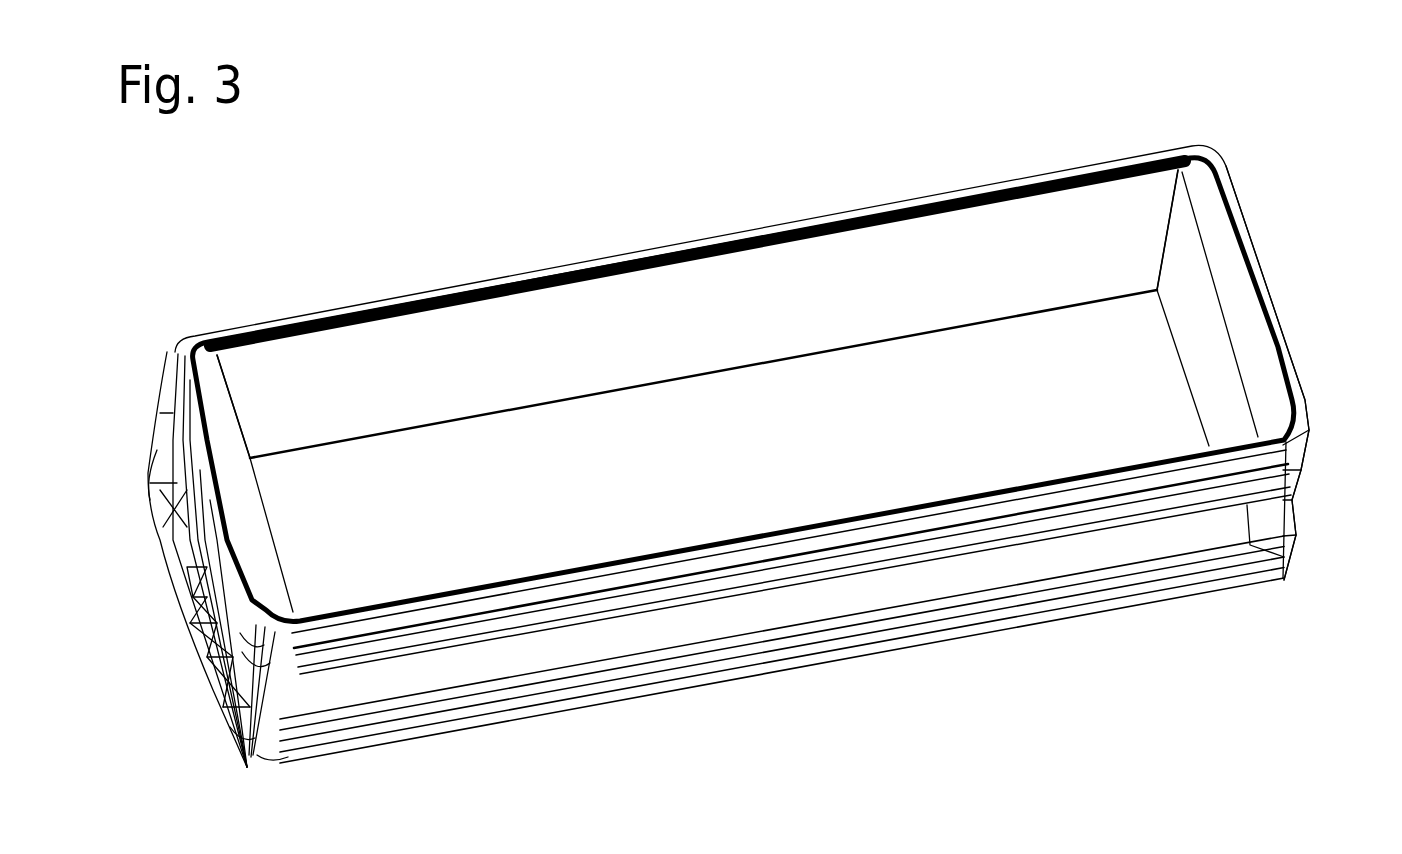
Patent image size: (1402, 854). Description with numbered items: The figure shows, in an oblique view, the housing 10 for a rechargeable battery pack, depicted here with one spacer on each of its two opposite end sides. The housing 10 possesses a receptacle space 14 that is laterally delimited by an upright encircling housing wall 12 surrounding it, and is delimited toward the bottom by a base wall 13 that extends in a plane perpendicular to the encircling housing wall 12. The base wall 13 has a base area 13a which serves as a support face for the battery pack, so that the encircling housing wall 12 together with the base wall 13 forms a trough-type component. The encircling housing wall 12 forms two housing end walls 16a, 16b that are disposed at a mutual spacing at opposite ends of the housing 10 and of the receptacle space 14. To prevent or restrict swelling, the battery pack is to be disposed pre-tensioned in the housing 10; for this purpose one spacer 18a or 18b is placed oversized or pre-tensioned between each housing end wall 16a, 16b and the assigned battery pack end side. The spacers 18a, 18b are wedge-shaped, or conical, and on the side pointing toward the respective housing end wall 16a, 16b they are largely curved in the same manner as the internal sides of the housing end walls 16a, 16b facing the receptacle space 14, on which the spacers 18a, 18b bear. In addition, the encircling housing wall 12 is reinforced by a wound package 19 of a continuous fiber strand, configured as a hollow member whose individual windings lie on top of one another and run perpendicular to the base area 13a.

The housing 10 is at (550, 220).
The encircling housing wall 12 is at (865, 593).
The base wall 13 is at (577, 705).
The base area 13a is at (732, 473).
The receptacle space 14 is at (981, 368).
The housing end wall 16a is at (192, 565).
The housing end wall 16b is at (1300, 373).
The spacer 18a is at (258, 560).
The spacer 18b is at (1240, 315).
The wound package 19 is at (1228, 172).